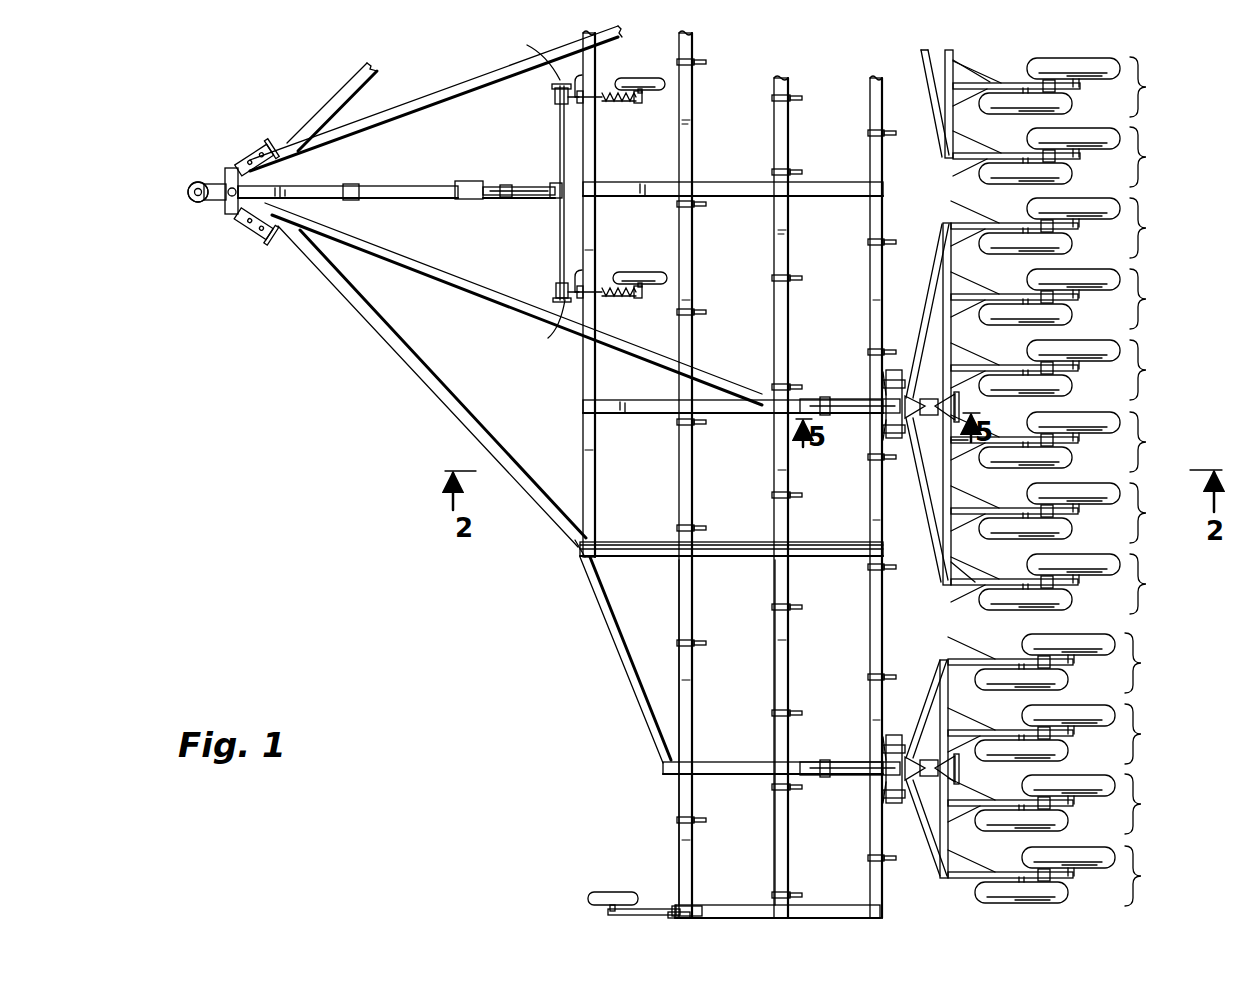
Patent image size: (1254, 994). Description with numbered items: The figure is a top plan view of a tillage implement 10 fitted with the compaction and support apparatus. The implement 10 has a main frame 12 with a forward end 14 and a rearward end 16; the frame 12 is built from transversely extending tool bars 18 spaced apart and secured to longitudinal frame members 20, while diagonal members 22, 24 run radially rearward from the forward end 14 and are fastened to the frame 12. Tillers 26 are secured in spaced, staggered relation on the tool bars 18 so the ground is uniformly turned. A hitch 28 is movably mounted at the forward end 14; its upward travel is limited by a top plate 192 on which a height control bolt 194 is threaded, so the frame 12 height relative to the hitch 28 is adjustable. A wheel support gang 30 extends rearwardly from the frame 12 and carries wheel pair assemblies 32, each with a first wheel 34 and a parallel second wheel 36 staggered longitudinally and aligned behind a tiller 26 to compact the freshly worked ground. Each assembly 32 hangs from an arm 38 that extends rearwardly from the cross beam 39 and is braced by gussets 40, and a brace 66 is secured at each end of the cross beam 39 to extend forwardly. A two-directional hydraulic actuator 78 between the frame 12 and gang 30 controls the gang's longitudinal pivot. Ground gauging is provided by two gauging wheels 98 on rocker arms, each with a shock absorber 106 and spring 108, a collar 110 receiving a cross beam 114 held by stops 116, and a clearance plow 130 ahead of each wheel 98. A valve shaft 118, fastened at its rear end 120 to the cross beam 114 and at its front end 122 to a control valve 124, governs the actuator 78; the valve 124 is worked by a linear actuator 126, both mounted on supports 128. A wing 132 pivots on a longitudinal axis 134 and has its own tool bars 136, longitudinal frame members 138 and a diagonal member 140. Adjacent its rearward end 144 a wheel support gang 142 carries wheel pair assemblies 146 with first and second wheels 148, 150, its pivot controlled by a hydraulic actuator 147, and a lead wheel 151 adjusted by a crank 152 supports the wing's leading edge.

The tillage implement 10 is at (392, 395).
The main frame 12 is at (570, 542).
The forward end 14 is at (200, 188).
The rearward end 16 is at (885, 210).
The tool bars 18 is at (692, 106).
The longitudinal frame members 20 is at (722, 181).
The diagonal member 22 is at (432, 96).
The diagonal member 24 is at (360, 78).
The tillers 26 is at (705, 62).
The hitch 28 is at (200, 197).
The wheel support gang 30 is at (925, 60).
The wheel pair assembly 32 is at (1150, 335).
The first wheel 34 is at (1028, 68).
The second wheel 36 is at (1072, 105).
The arm 38 is at (963, 223).
The cross beam 39 is at (953, 58).
The gussets 40 is at (960, 570).
The brace 66 is at (944, 110).
The hydraulic actuator 78 is at (858, 398).
The gauging wheel 98 is at (650, 78).
The shock absorber 106 is at (620, 103).
The spring 108 is at (638, 100).
The collar 110 is at (553, 96).
The cross beam 114 is at (559, 133).
The stop 116 is at (542, 190).
The valve shaft 118 is at (496, 201).
The rear end 120 is at (556, 199).
The front end 122 is at (492, 185).
The control valve 124 is at (460, 180).
The linear actuator 126 is at (380, 184).
The supports 128 is at (347, 194).
The clearance plow 130 is at (580, 73).
The wing 132 is at (620, 713).
The longitudinal axis 134 is at (756, 556).
The tool bars 136 is at (692, 688).
The longitudinal frame members 138 is at (810, 556).
The diagonal member 140 is at (622, 628).
The wheel support gang 142 is at (922, 730).
The rearward end 144 is at (886, 810).
The wheel pair assembly 146 is at (1150, 769).
The hydraulic actuator 147 is at (850, 758).
The first wheel 148 is at (1024, 640).
The second wheel 150 is at (1070, 681).
The lead wheel 151 is at (614, 892).
The crank 152 is at (693, 918).
The top plate 192 is at (234, 213).
The height control bolt 194 is at (226, 180).